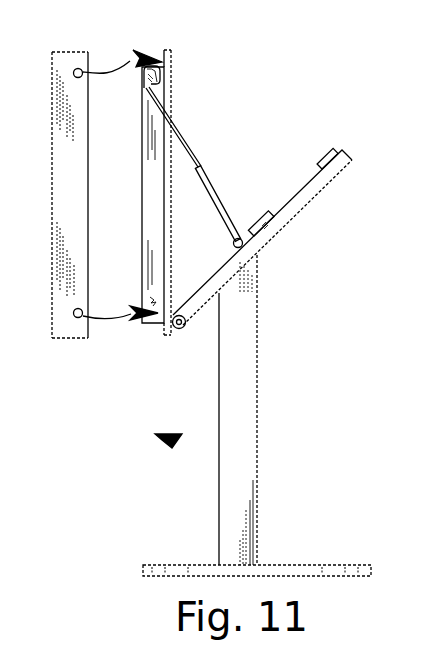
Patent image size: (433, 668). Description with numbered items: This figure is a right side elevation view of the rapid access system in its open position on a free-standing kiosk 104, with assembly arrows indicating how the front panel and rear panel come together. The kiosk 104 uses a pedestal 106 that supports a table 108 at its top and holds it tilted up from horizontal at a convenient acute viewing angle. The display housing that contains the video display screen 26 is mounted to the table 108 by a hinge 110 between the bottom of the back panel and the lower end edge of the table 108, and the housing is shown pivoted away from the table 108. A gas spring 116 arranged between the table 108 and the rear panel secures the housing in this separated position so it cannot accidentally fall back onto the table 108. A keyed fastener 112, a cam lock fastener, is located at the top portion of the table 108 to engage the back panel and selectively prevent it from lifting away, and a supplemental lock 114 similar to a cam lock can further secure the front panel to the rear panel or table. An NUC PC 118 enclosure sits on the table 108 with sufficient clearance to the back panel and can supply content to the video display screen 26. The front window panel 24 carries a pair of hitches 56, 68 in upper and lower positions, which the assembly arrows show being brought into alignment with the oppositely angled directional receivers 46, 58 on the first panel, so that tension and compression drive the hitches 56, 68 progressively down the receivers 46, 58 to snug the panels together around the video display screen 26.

The front window panel 24 is at (66, 190).
The video display screen 26 is at (155, 192).
The directional receiver 46 is at (162, 82).
The hitch 56 is at (74, 70).
The directional receiver 58 is at (153, 300).
The hitch 68 is at (77, 319).
The kiosk 104 is at (156, 442).
The pedestal 106 is at (247, 463).
The table 108 is at (308, 190).
The hinge 110 is at (178, 329).
The keyed fastener 112 is at (323, 151).
The supplemental lock 114 is at (104, 60).
The gas spring 116 is at (190, 141).
The NUC PC enclosure 118 is at (256, 216).